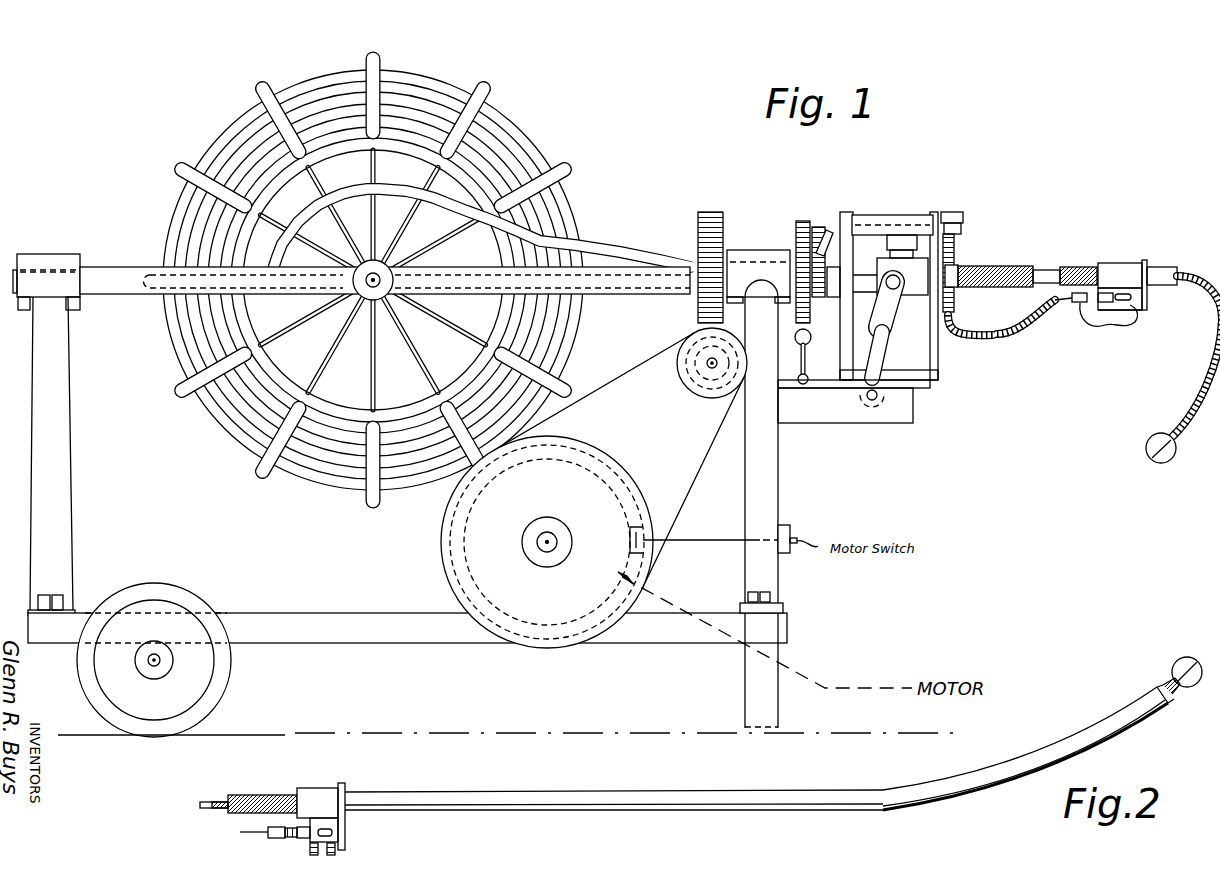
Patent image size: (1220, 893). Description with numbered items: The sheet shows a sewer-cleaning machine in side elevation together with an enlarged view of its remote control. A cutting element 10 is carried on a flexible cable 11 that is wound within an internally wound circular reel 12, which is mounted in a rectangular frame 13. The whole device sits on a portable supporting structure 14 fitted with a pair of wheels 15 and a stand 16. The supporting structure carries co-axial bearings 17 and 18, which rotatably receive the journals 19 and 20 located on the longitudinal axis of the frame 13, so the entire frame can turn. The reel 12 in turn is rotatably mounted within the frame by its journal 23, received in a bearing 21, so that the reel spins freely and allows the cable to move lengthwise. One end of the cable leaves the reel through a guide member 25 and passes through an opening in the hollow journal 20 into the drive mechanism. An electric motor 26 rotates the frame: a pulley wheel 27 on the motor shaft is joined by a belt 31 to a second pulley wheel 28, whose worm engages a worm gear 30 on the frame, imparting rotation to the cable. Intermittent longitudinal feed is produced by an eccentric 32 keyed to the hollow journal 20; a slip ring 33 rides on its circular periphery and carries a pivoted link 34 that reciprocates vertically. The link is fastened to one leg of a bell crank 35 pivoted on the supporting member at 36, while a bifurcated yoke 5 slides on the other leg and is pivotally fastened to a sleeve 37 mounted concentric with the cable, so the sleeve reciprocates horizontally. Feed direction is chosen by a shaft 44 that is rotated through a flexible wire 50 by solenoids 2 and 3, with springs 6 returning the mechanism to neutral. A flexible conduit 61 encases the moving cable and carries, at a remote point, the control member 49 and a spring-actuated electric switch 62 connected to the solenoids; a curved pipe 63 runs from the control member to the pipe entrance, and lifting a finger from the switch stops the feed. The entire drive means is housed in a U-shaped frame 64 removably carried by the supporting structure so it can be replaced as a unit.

In FIG. 1, the solenoid 2 is at (1077, 305).
In FIG. 2, the solenoid 2 is at (274, 840).
In FIG. 1, the solenoid 3 is at (1102, 310).
In FIG. 2, the solenoid 3 is at (303, 830).
In FIG. 1, the bifurcated yoke 5 is at (897, 306).
In FIG. 1, the springs 6 is at (1088, 305).
In FIG. 1, the cutting element 10 is at (1185, 268).
In FIG. 2, the cutting element 10 is at (1174, 662).
In FIG. 1, the flexible cable 11 is at (373, 275).
In FIG. 1, the reel 12 is at (373, 275).
In FIG. 1, the frame 13 is at (110, 267).
In FIG. 1, the portable supporting structure 14 is at (68, 466).
In FIG. 1, the wheels 15 is at (222, 680).
In FIG. 1, the stand 16 is at (745, 690).
In FIG. 1, the bearing 17 is at (38, 253).
In FIG. 1, the bearing 18 is at (741, 250).
In FIG. 1, the journal 19 is at (60, 270).
In FIG. 1, the journal 20 is at (768, 262).
In FIG. 1, the bearing 21 is at (372, 280).
In FIG. 1, the journal 23 is at (381, 282).
In FIG. 1, the guide member 25 is at (540, 236).
In FIG. 1, the electric motor 26 is at (609, 541).
In FIG. 1, the pulley wheel 27 is at (600, 462).
In FIG. 1, the pulley wheel 28 is at (700, 393).
In FIG. 1, the worm gear 30 is at (705, 210).
In FIG. 1, the belt 31 is at (605, 383).
In FIG. 1, the eccentric 32 is at (788, 220).
In FIG. 1, the slip ring 33 is at (814, 227).
In FIG. 1, the link 34 is at (808, 358).
In FIG. 1, the bell crank 35 is at (889, 350).
In FIG. 1, the bell crank pivot 36 is at (870, 401).
In FIG. 1, the sleeve 37 is at (889, 275).
In FIG. 1, the shaft 44 is at (912, 212).
In FIG. 1, the control member 49 is at (1153, 312).
In FIG. 2, the control member 49 is at (300, 845).
In FIG. 1, the flexible wire 50 is at (1030, 334).
In FIG. 2, the flexible wire 50 is at (255, 838).
In FIG. 1, the flexible conduit 61 is at (1008, 265).
In FIG. 2, the flexible conduit 61 is at (258, 795).
In FIG. 2, the electric switch 62 is at (306, 840).
In FIG. 1, the curved pipe 63 is at (1160, 262).
In FIG. 2, the curved pipe 63 is at (885, 812).
In FIG. 1, the U-shaped frame 64 is at (869, 423).